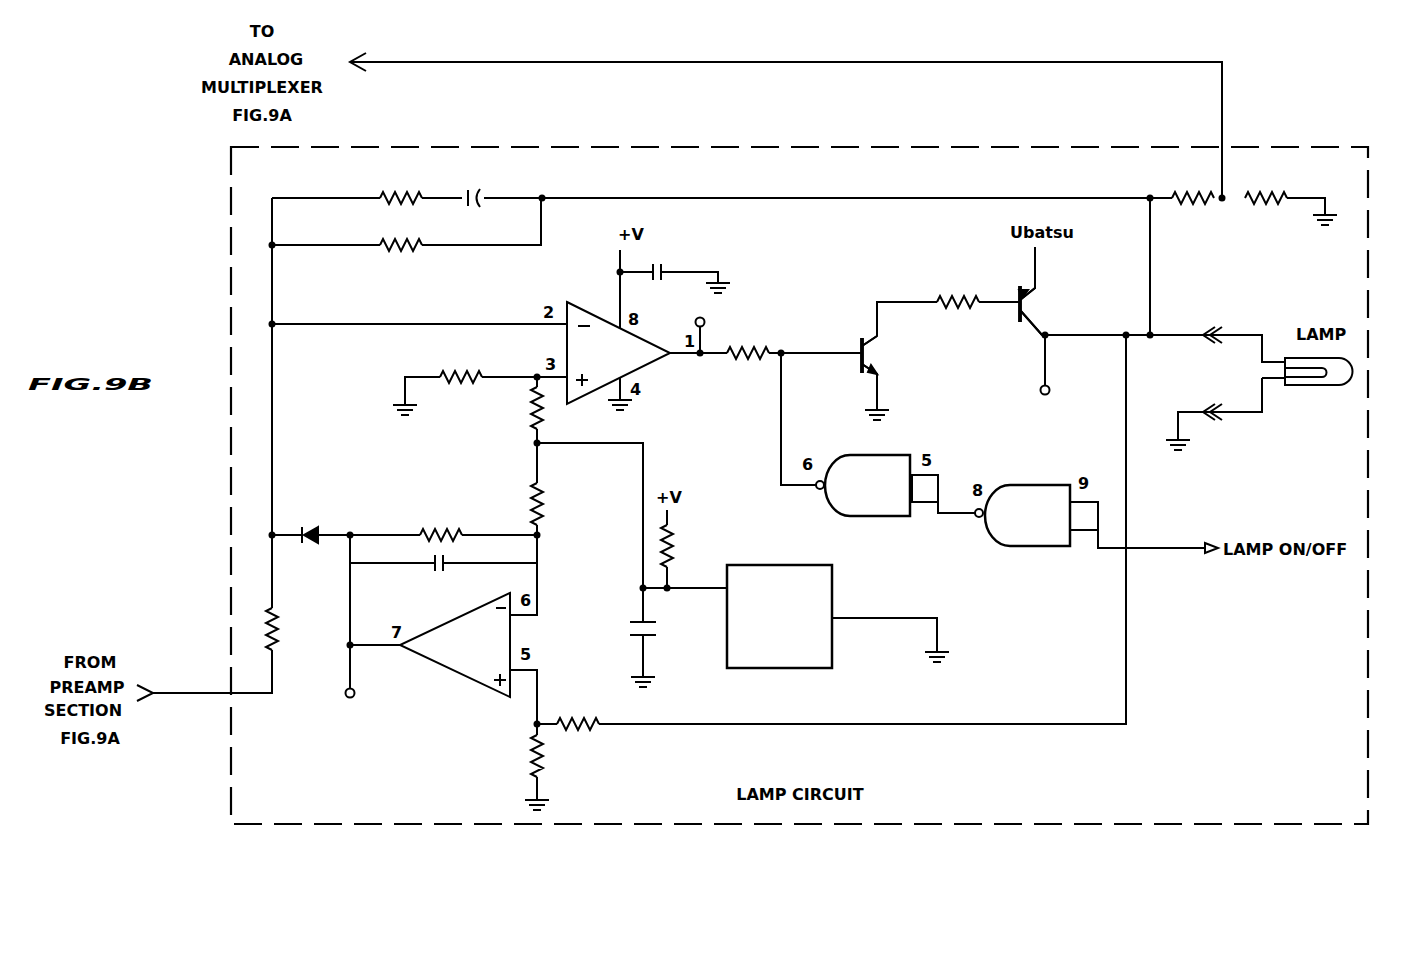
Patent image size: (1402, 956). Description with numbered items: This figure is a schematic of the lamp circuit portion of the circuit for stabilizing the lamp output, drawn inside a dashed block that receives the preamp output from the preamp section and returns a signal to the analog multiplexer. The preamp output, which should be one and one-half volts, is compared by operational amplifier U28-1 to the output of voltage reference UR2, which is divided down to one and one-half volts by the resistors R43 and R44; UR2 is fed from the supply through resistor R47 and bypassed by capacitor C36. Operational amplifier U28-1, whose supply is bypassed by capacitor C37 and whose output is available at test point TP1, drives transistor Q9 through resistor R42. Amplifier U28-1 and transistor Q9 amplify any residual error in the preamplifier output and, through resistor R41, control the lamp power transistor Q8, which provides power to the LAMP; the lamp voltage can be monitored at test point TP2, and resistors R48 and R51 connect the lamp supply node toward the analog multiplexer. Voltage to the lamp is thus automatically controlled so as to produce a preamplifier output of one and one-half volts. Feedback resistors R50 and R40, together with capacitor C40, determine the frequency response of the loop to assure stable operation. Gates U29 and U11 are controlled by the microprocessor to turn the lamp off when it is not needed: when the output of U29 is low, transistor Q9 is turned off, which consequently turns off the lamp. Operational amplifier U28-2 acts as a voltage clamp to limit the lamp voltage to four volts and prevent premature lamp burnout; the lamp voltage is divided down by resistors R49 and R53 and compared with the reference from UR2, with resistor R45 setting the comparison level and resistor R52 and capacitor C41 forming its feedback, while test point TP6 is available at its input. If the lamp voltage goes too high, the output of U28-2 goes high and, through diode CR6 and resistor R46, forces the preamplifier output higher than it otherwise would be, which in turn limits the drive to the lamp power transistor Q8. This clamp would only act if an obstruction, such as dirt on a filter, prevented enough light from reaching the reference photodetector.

The feedback resistor R50 is at (367, 194).
The capacitor C40 is at (812, 197).
The feedback resistor R40 is at (406, 248).
The operational amplifier U28-1 is at (618, 353).
The capacitor C37 is at (669, 274).
The test point TP1 is at (720, 327).
The resistor R42 is at (744, 355).
The transistor Q9 is at (907, 365).
The resistor R41 is at (957, 300).
The lamp power transistor Q8 is at (1059, 301).
The test point TP2 is at (1053, 376).
The resistor R48 is at (1190, 199).
The resistor R51 is at (1285, 198).
The lamp LAMP is at (1319, 355).
The divider resistor R44 is at (458, 378).
The divider resistor R43 is at (508, 417).
The resistor R45 is at (560, 500).
The resistor R52 is at (443, 509).
The capacitor C41 is at (443, 566).
The diode CR6 is at (311, 534).
The resistor R46 is at (293, 627).
The test point TP6 is at (358, 686).
The voltage clamp operational amplifier U28-2 is at (455, 645).
The resistor R53 is at (514, 751).
The resistor R49 is at (586, 720).
The resistor R47 is at (688, 549).
The capacitor C36 is at (664, 625).
The voltage reference UR2 is at (832, 616).
The gate U29 is at (877, 485).
The gate U11 is at (1036, 515).